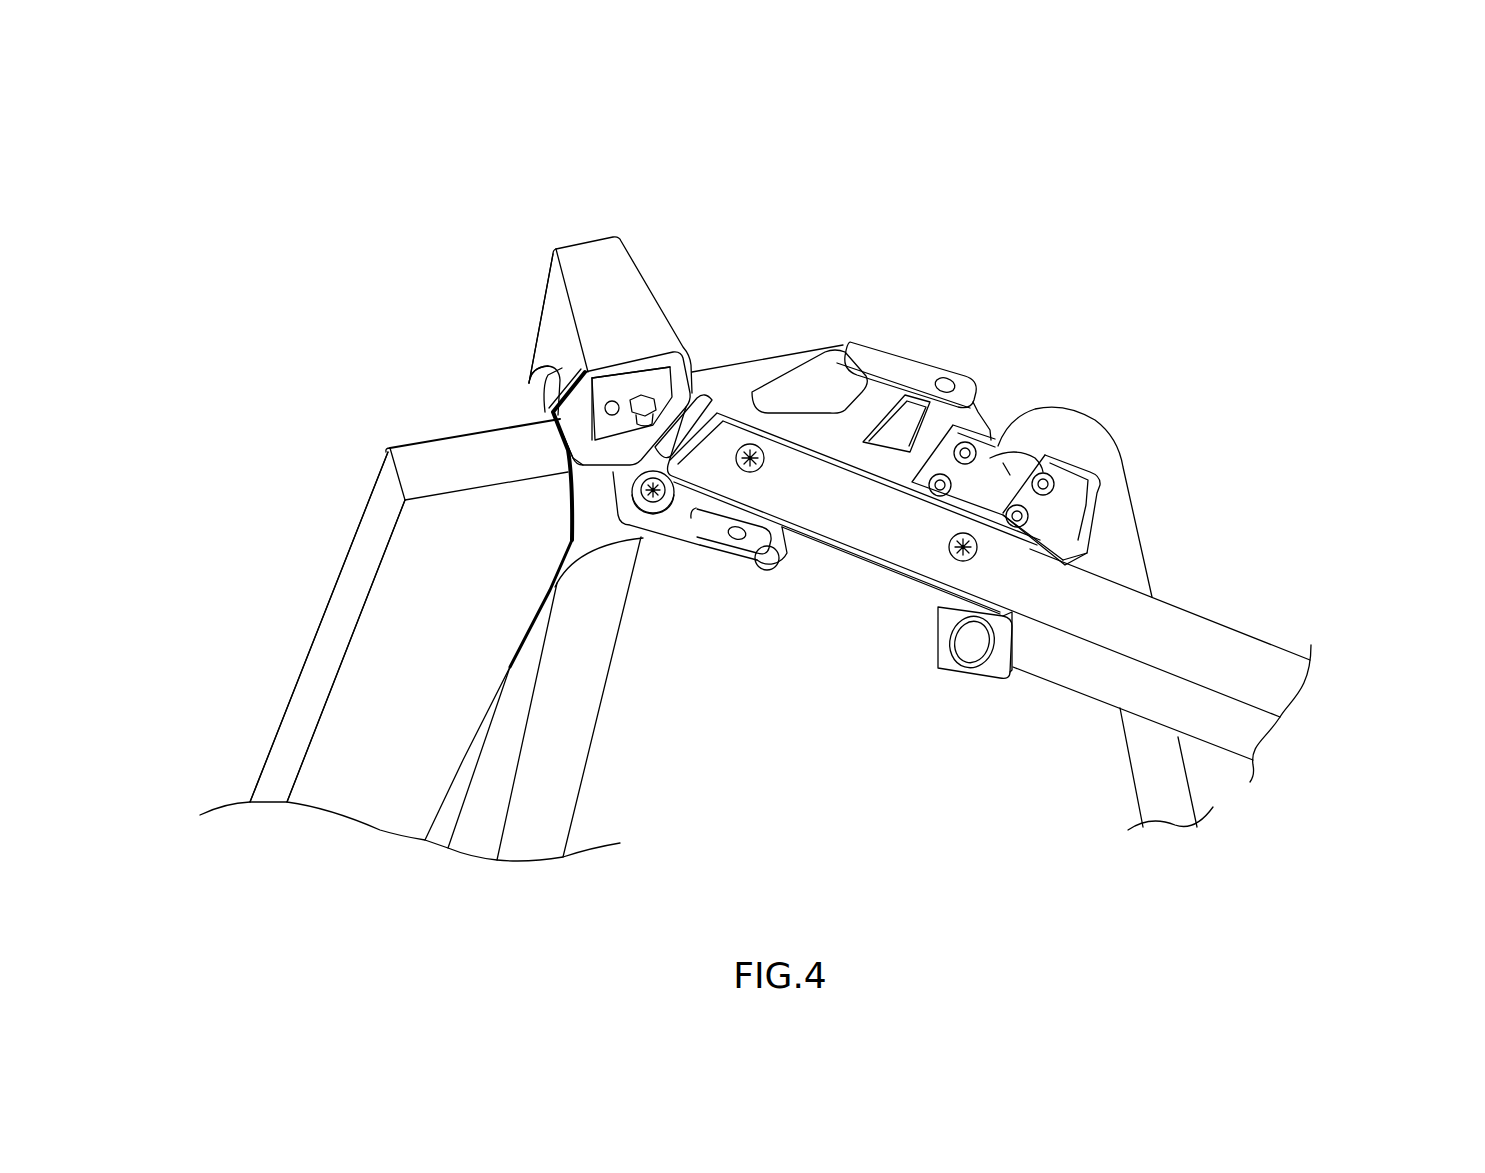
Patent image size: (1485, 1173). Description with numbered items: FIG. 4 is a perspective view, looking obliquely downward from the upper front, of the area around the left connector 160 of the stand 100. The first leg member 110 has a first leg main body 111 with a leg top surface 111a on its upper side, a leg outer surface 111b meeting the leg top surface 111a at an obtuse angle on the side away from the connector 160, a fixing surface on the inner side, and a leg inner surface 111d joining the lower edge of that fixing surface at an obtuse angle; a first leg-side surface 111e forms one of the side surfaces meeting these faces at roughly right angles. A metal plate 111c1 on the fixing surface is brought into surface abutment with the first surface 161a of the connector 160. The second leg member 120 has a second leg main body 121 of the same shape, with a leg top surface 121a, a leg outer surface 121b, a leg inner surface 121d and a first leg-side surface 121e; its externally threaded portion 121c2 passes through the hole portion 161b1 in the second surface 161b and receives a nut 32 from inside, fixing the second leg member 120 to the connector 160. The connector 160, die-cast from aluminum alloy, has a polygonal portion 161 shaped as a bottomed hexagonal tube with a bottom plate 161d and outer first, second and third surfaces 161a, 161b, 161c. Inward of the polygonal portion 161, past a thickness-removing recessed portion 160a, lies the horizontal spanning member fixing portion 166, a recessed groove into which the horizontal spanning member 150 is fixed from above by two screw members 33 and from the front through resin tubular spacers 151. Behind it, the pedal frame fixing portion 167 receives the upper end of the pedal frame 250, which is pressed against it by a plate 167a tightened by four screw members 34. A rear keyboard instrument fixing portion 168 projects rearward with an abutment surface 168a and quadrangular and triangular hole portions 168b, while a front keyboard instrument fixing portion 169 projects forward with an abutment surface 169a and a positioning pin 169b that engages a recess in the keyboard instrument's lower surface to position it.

The stand 100 is at (864, 768).
The first leg member 110 is at (283, 669).
The first leg main body 111 is at (343, 572).
The leg top surface 111a is at (447, 462).
The leg outer surface 111b is at (291, 750).
The metal plate 111c1 is at (569, 499).
The leg inner surface 111d is at (451, 828).
The first leg-side surface 111e is at (375, 768).
The second leg member 120 is at (675, 270).
The second leg main body 121 is at (633, 260).
The leg top surface 121a is at (640, 313).
The leg outer surface 121b is at (574, 226).
The externally threaded portion 121c2 is at (580, 348).
The leg inner surface 121d is at (557, 753).
The first leg-side surface 121e is at (572, 364).
The horizontal spanning member 150 is at (1257, 665).
The resin tubular spacers 151 is at (768, 565).
The connector 160 is at (927, 318).
The thickness-removing recessed portion 160a is at (695, 425).
The polygonal portion 161 is at (539, 400).
The first surface 161a is at (600, 445).
The second surface 161b is at (626, 340).
The hole portion 161b1 is at (606, 402).
The third surface 161c is at (571, 394).
The bottom plate 161d is at (546, 432).
The horizontal spanning member fixing portion 166 is at (1070, 547).
The pedal frame fixing portion 167 is at (1012, 455).
The plate 167a is at (1010, 475).
The rear keyboard instrument fixing portion 168 is at (990, 392).
The abutment surface 168a is at (923, 373).
The openings of connecting member 168b is at (903, 427).
The front keyboard instrument fixing portion 169 is at (677, 522).
The abutment surface 169a is at (730, 545).
The positioning pin 169b is at (655, 500).
The pedal frame 250 is at (1100, 416).
The nut 32 is at (650, 398).
The screw members 33 is at (752, 446).
The screw members 34 is at (1092, 470).